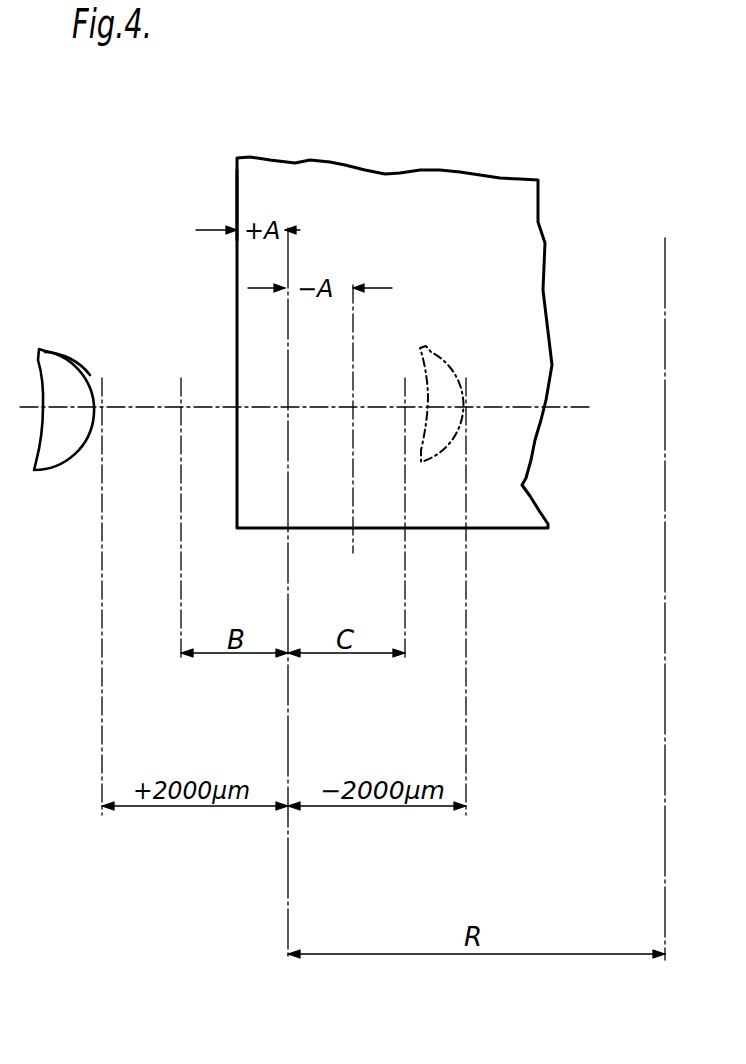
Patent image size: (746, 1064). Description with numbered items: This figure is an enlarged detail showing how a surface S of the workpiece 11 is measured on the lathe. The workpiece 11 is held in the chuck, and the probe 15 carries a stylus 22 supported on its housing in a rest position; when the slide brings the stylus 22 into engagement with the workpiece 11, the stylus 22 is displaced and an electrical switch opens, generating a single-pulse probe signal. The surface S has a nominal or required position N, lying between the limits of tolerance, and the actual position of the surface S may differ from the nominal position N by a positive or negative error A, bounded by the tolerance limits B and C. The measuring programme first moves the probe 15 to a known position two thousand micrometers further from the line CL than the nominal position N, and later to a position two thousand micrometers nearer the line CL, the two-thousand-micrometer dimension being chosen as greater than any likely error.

The workpiece 11 is at (237, 180).
The surface to be measured S is at (237, 202).
The probe 15 is at (78, 360).
The stylus 22 is at (96, 378).
The nominal position of the surface N is at (290, 886).
The line CL is at (665, 566).